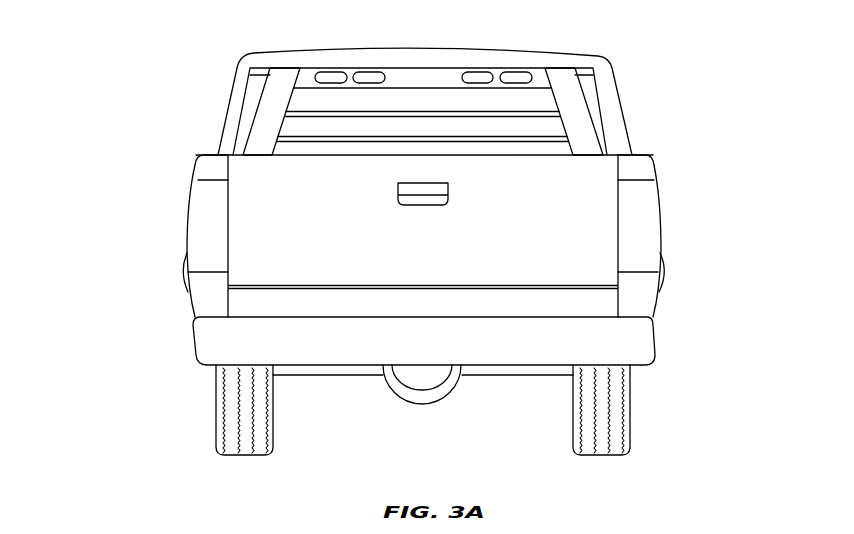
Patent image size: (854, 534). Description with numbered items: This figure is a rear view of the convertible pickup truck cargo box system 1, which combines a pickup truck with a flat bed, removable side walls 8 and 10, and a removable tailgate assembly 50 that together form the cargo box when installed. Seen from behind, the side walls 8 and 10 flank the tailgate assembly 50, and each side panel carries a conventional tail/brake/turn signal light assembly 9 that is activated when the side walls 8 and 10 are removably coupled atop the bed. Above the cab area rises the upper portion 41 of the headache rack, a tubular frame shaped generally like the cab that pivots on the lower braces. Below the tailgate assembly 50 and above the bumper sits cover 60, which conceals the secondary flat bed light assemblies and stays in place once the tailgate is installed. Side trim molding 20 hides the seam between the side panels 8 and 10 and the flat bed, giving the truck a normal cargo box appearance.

The convertible pickup truck cargo box system 1 is at (110, 116).
The removable side wall 10 is at (207, 162).
The upper portion of headache rack 41 is at (572, 105).
The removable side wall 8 is at (655, 165).
The removable tailgate assembly 50 is at (588, 178).
The tail/brake/turn signal light assembly 9 is at (195, 220).
The side trim molding 20 is at (185, 275).
The cover 60 is at (247, 297).